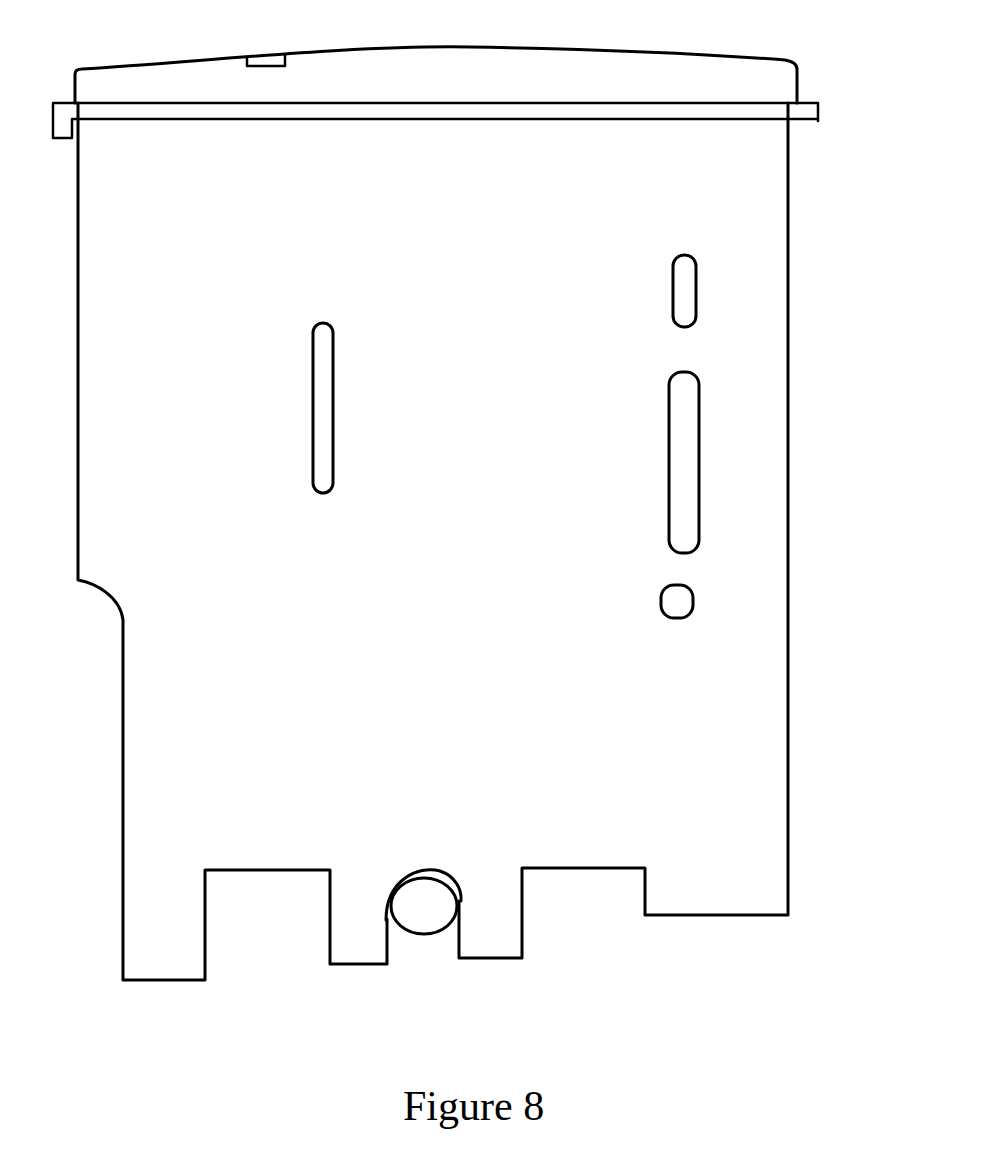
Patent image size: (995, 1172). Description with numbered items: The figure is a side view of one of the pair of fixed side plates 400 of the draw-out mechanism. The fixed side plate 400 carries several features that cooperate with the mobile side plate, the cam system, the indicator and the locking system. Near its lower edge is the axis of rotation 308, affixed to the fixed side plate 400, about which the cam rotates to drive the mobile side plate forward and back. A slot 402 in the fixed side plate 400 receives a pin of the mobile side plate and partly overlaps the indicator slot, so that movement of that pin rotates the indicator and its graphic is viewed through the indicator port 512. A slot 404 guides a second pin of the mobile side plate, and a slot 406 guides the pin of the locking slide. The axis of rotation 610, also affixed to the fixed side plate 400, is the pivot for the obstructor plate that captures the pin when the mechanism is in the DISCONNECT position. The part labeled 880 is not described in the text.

The fixed side plate 400 is at (790, 183).
The lid 880 is at (673, 48).
The indicator port 512 is at (270, 54).
The slot 402 is at (334, 450).
The slot 404 is at (699, 424).
The slot 406 is at (697, 278).
The axis of rotation 610 is at (693, 613).
The axis of rotation 308 is at (423, 935).